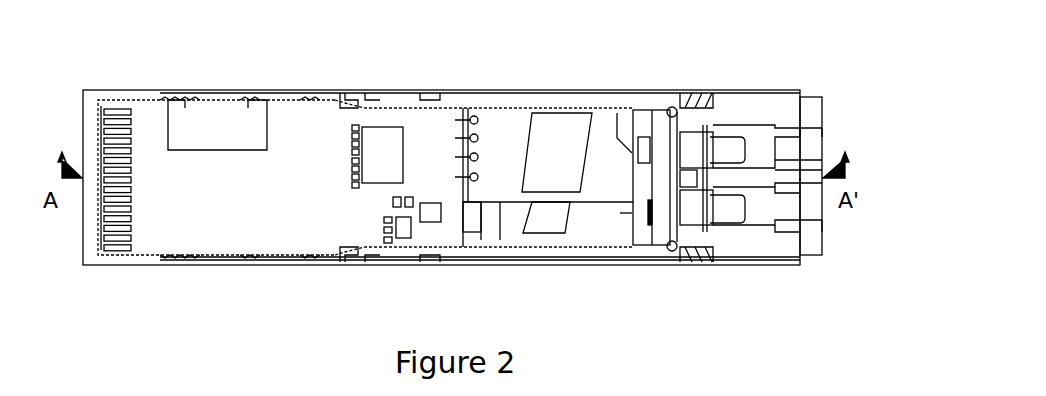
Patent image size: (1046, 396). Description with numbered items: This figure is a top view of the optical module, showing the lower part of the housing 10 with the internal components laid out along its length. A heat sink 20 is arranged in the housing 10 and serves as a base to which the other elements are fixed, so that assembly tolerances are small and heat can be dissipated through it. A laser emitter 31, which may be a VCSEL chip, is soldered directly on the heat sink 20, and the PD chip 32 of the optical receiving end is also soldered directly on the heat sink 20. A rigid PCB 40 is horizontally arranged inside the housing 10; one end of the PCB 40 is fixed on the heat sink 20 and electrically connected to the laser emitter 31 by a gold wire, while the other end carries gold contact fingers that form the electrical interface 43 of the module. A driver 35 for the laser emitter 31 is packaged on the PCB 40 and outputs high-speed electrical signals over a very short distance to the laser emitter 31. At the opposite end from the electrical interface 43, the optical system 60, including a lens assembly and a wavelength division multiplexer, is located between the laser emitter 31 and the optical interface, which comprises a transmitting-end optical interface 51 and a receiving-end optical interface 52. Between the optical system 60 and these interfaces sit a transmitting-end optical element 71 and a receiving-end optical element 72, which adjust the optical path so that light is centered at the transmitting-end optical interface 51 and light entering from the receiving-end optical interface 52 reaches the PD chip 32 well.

The housing 10 is at (372, 262).
The heat sink 20 is at (505, 152).
The laser emitter 31 is at (464, 122).
The PD chip 32 is at (494, 222).
The driver 35 is at (380, 137).
The PCB 40 is at (432, 125).
The electrical interface 43 is at (116, 148).
The transmitting-end optical interface 51 is at (726, 148).
The receiving-end optical interface 52 is at (727, 215).
The optical system 60 is at (558, 136).
The transmitting-end optical element 71 is at (628, 124).
The receiving-end optical element 72 is at (628, 212).